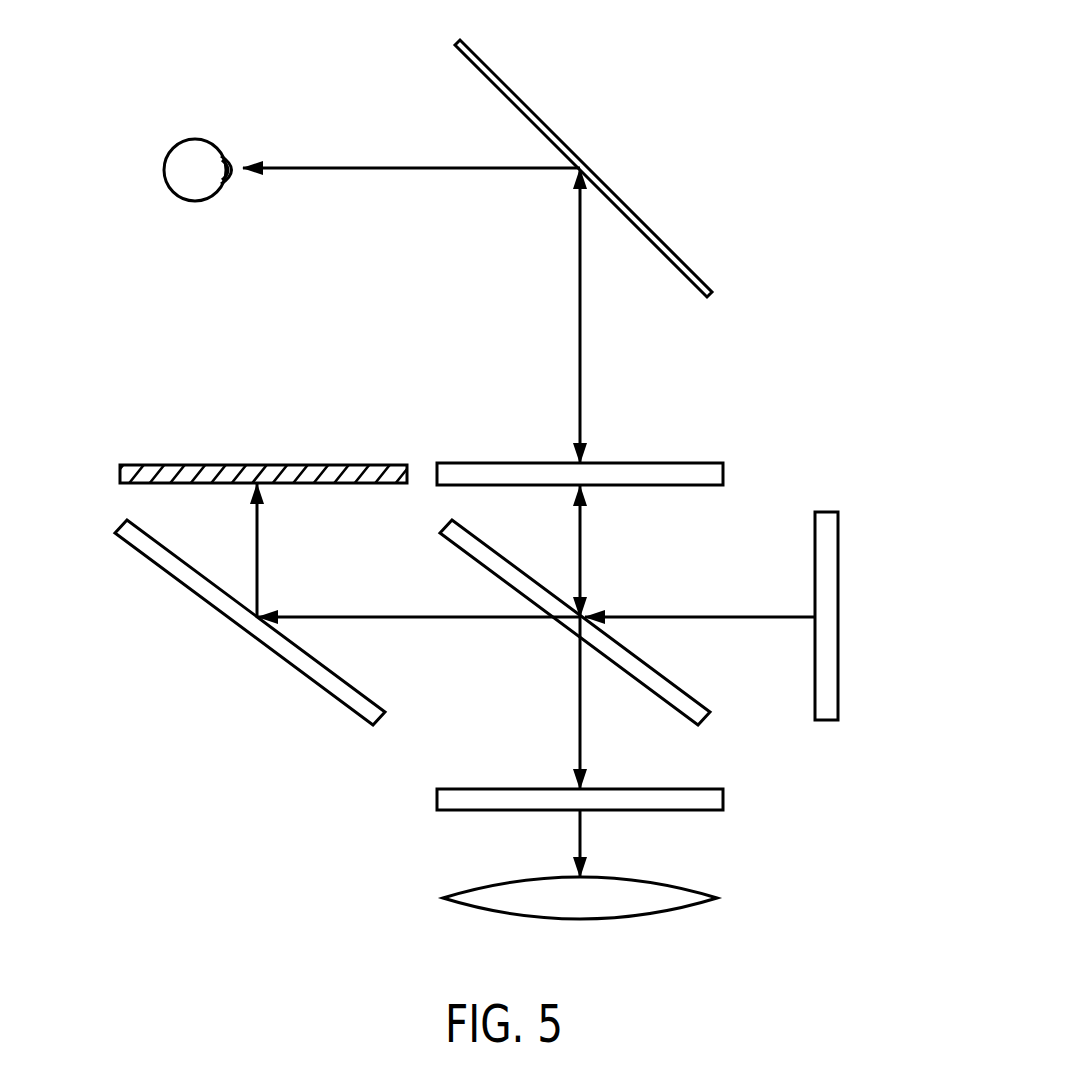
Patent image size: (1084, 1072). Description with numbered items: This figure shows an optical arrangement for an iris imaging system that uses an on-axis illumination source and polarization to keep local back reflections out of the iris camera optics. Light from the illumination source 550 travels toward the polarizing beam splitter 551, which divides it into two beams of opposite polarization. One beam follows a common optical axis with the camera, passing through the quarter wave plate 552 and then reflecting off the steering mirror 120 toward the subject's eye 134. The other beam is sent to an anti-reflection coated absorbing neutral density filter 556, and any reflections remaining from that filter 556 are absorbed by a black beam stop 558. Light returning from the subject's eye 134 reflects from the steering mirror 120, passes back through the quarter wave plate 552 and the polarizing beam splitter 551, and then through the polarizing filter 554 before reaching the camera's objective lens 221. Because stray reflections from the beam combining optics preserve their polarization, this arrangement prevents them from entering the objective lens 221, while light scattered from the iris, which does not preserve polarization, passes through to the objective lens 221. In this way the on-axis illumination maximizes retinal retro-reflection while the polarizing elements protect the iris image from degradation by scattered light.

The subject's eye 134 is at (192, 138).
The steering mirror 120 is at (677, 252).
The black beam stop 558 is at (167, 464).
The quarter wave plate 552 is at (703, 463).
The illumination source 550 is at (838, 577).
The polarizing beam splitter 551 is at (700, 720).
The anti-reflection coated absorbing neutral density filter 556 is at (212, 605).
The polarizing filter 554 is at (723, 798).
The camera's objective lens 221 is at (440, 898).